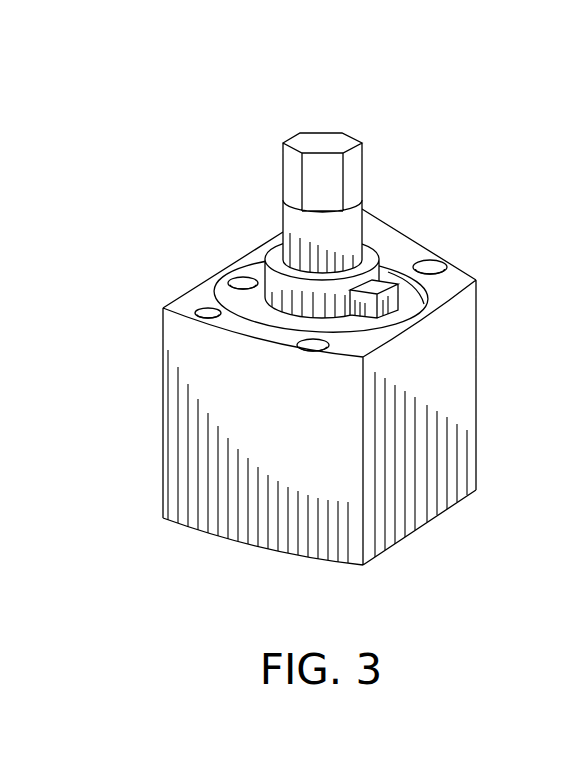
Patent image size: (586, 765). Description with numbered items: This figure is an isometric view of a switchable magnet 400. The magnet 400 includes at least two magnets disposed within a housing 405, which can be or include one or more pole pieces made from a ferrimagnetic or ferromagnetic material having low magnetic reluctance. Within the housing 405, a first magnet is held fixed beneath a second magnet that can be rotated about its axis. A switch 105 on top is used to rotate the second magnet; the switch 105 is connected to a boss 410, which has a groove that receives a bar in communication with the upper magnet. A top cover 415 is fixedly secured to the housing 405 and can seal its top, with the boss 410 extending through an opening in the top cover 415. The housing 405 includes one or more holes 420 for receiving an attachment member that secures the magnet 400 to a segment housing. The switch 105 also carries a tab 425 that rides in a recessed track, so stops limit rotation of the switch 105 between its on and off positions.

The magnet 400 is at (185, 163).
The switch 105 is at (322, 142).
The boss 410 is at (350, 224).
The top cover 415 is at (250, 307).
The holes 420 is at (444, 262).
The tab 425 is at (394, 294).
The housing 405 is at (185, 443).